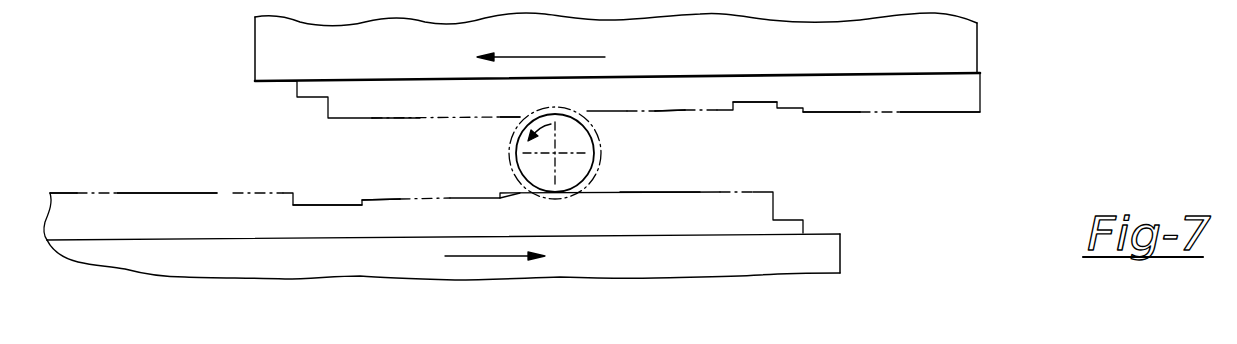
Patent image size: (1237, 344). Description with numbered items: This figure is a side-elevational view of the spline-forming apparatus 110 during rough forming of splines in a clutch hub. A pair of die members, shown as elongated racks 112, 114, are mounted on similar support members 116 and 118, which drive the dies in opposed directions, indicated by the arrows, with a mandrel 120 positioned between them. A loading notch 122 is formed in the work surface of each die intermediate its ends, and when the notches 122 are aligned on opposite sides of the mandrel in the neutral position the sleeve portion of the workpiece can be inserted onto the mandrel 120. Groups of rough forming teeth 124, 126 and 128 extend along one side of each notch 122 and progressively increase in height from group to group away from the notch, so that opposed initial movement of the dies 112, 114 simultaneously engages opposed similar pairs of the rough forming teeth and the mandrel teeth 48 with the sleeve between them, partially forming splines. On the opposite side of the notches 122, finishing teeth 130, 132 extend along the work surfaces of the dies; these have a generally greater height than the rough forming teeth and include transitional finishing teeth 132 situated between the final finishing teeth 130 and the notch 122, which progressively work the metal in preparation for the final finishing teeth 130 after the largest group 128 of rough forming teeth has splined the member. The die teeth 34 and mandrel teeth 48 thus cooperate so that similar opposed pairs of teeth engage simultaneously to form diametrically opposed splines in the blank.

The spline-forming apparatus 110 is at (1049, 83).
The elongated rack 112 is at (975, 90).
The elongated rack 114 is at (773, 203).
The support member 116 is at (258, 43).
The support member 118 is at (832, 255).
The mandrel 120 is at (586, 146).
The loading notch 122 is at (773, 110).
The rough forming teeth 124 is at (687, 113).
The rough forming teeth 126 is at (517, 113).
The rough forming teeth 128 is at (413, 123).
The final finishing teeth 130 is at (953, 112).
The transitional finishing teeth 132 is at (853, 112).
The die teeth 34 is at (652, 122).
The mandrel teeth 48 is at (591, 181).